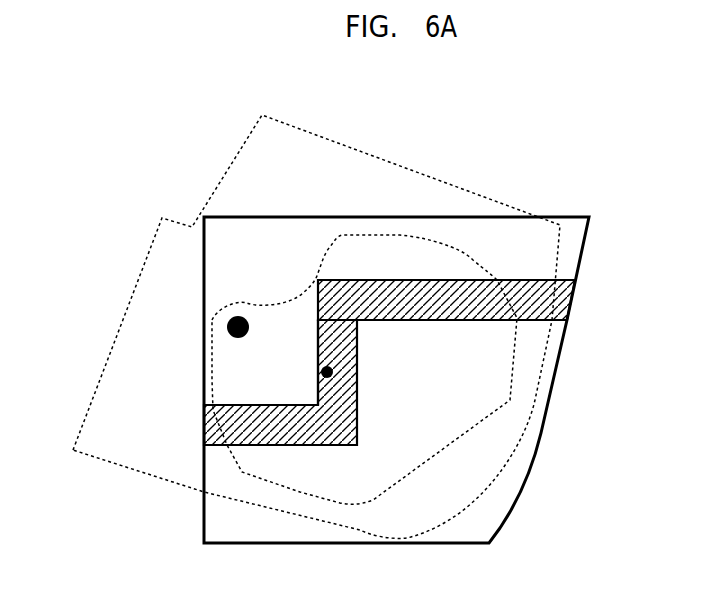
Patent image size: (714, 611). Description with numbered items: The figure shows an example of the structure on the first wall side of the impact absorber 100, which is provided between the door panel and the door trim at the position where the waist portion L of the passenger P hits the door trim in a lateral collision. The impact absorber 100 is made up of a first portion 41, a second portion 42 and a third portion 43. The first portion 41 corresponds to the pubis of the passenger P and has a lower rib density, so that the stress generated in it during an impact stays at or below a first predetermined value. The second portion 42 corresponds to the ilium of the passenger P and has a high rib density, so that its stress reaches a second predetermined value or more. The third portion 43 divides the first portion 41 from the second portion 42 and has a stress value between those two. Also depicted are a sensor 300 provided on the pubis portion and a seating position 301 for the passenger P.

The impact absorber 100 is at (542, 433).
The third portion 43 is at (572, 302).
The second portion 42 is at (520, 413).
The first portion 41 is at (235, 238).
The sensor 300 is at (225, 331).
The seating position 301 is at (322, 377).
The passenger P is at (418, 172).
The waist portion L is at (477, 257).